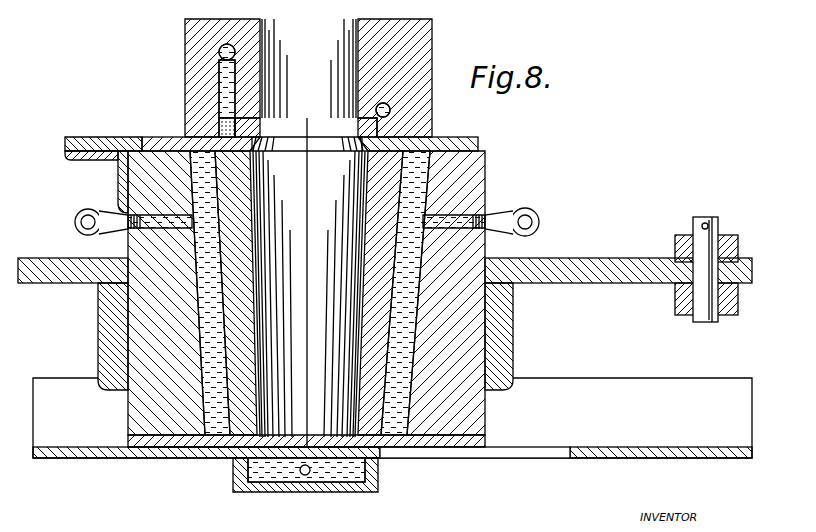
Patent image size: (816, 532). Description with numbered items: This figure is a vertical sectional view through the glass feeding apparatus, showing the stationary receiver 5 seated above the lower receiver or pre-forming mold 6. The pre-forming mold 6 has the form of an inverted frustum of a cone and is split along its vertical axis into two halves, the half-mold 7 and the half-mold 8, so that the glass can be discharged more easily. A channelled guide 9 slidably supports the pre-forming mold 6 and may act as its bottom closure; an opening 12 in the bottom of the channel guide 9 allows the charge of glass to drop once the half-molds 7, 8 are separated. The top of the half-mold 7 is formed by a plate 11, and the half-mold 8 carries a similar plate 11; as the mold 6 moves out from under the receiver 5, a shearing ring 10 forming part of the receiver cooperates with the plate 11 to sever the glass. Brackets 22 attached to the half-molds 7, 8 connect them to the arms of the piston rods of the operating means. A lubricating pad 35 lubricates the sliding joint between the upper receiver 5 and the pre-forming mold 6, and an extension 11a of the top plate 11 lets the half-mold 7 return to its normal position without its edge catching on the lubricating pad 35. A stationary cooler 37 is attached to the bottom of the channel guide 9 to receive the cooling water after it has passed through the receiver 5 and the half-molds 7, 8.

The stationary receiver 5 is at (423, 57).
The pre-forming mold 6 is at (309, 282).
The half-mold 7 is at (137, 325).
The half-mold 8 is at (473, 332).
The channelled guide 9 is at (392, 418).
The shearing ring 10 is at (385, 126).
The plate 11 is at (160, 142).
The extension 11a is at (107, 133).
The opening 12 is at (527, 455).
The bracket 22 is at (35, 266).
The lubricating pad 35 is at (218, 125).
The stationary cooler 37 is at (352, 488).